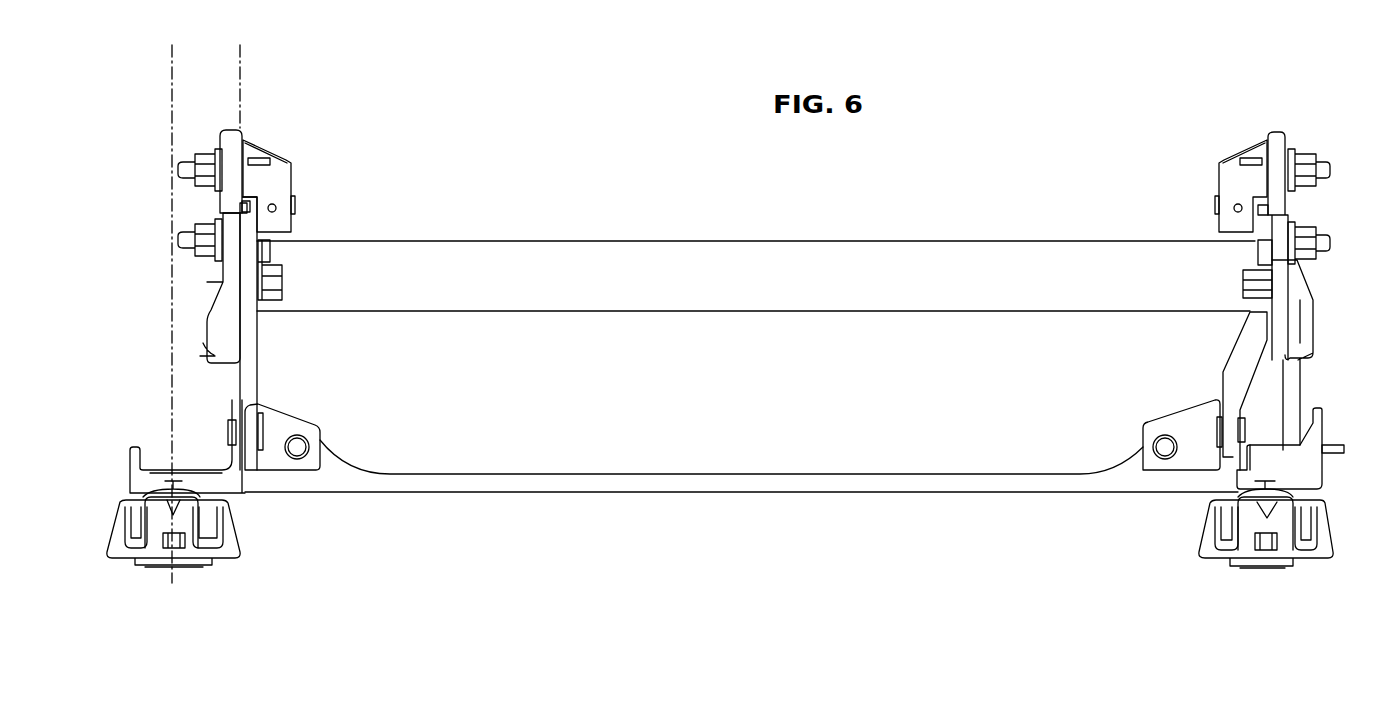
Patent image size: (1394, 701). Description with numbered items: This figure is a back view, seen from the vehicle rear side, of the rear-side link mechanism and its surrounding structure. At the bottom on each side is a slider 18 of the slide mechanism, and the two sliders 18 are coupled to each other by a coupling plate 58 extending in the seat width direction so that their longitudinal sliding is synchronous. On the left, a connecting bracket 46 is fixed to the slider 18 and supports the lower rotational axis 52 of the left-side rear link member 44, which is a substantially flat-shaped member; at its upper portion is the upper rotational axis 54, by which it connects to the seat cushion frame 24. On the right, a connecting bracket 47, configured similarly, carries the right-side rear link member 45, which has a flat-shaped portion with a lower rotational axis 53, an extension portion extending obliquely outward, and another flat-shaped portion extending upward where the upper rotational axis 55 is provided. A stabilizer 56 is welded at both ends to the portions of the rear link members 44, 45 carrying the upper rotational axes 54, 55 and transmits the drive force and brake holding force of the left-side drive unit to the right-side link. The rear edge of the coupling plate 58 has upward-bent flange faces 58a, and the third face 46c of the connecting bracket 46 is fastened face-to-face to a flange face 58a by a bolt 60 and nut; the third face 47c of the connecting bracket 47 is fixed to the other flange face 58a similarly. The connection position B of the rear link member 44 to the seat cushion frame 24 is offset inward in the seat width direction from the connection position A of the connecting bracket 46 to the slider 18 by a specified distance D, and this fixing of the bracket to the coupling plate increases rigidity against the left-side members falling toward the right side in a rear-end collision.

The slider 18 is at (157, 545).
The seat cushion frame 24 is at (278, 170).
The rear link member 44 is at (258, 345).
The rear link member 45 is at (1222, 358).
The connecting bracket 46 is at (175, 470).
The third face 46c is at (290, 412).
The connecting bracket 47 is at (1293, 463).
The third face 47c is at (1190, 412).
The lower rotational axis 52 is at (232, 440).
The lower rotational axis 53 is at (1243, 422).
The upper rotational axis 54 is at (193, 275).
The upper rotational axis 55 is at (1300, 278).
The stabilizer 56 is at (568, 241).
The coupling plate 58 is at (603, 492).
The flange face 58a is at (322, 438).
The bolt 60 is at (298, 452).
The connection position A is at (138, 450).
The connection position B is at (238, 282).
The specified distance D is at (228, 67).